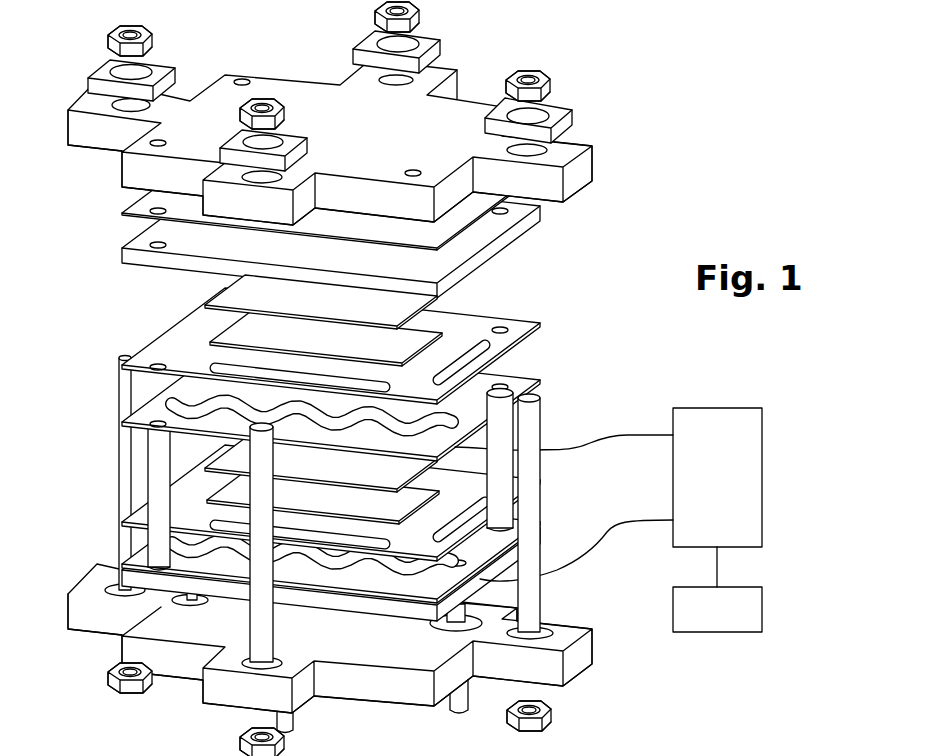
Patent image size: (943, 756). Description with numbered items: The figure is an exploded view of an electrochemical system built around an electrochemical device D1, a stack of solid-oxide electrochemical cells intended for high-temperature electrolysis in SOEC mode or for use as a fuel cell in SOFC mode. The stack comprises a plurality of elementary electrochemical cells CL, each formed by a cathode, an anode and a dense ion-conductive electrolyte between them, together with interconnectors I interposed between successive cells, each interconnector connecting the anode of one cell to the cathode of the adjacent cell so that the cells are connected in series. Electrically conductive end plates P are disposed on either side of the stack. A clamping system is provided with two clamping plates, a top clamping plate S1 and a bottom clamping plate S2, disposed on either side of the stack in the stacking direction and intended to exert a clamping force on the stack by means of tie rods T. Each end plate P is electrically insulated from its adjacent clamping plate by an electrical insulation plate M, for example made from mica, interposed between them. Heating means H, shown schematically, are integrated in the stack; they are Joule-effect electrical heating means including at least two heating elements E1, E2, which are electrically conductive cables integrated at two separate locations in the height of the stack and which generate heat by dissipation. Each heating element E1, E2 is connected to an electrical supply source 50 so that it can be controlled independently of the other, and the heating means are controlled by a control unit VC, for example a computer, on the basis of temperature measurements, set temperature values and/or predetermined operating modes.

The top clamping plate S1 is at (582, 168).
The bottom clamping plate S2 is at (250, 690).
The end plate P is at (513, 230).
The electrical insulation plate M is at (137, 200).
The elementary electrochemical cell CL is at (237, 330).
The electrochemical device D1 is at (87, 387).
The interconnector I is at (203, 423).
The heating element E1 is at (560, 450).
The heating element E2 is at (560, 566).
The heating means H is at (563, 481).
The tie rod T is at (530, 530).
The electrical supply source 50 is at (732, 478).
The control unit VC is at (737, 613).